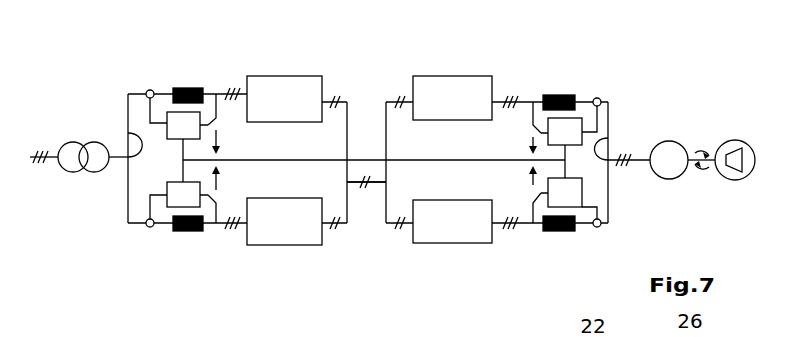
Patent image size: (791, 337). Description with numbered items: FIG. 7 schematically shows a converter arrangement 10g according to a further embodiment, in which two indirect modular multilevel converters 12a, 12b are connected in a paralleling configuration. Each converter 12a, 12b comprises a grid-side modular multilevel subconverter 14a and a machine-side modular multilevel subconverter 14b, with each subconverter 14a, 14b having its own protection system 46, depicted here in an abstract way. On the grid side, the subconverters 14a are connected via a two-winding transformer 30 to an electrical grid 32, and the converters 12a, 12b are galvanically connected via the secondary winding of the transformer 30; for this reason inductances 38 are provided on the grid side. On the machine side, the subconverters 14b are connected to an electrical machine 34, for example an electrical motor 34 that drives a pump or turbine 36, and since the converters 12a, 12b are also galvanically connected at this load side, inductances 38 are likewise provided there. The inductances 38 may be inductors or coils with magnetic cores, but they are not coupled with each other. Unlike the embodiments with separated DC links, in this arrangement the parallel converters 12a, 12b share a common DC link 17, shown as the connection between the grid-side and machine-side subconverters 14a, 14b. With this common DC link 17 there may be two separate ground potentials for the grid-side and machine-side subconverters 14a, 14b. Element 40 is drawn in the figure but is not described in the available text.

The converter arrangement 10g is at (662, 64).
The modular multilevel converter 12a is at (116, 95).
The modular multilevel converter 12b is at (101, 292).
The modular multilevel subconverter 14a is at (287, 77).
The modular multilevel subconverter 14b is at (452, 76).
The DC link 17 is at (355, 180).
The transformer 30 is at (100, 175).
The electrical grid 32 is at (52, 162).
The electrical machine 34 is at (662, 180).
The pump or turbine 36 is at (730, 180).
The inductance 38 is at (183, 88).
The inductor 40 is at (128, 134).
The protection system 46 is at (170, 117).